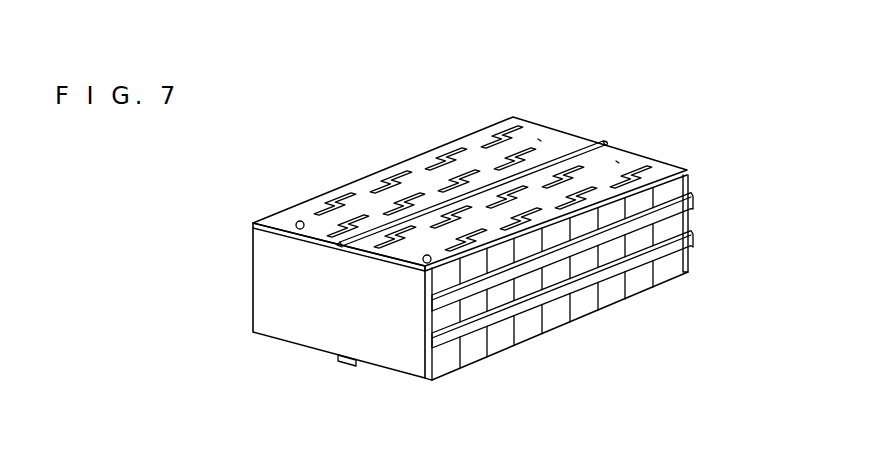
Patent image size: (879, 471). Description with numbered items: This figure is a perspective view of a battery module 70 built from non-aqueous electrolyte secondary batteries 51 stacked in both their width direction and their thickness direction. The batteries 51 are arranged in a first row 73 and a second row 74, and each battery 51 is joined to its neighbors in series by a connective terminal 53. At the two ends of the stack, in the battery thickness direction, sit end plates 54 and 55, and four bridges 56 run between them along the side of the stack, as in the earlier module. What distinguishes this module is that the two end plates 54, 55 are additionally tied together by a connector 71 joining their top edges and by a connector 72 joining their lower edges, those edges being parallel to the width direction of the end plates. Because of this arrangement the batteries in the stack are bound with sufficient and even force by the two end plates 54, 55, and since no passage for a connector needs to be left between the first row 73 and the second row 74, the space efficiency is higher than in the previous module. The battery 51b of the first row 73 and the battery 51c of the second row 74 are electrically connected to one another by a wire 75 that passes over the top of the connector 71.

The battery module 70 is at (488, 87).
The first row 73 is at (406, 152).
The connective terminal 53 is at (340, 203).
The wire 75 is at (580, 146).
The connector 71 is at (350, 248).
The battery 51b is at (540, 140).
The battery 51c is at (617, 162).
The end plate 54 is at (390, 353).
The connector 72 is at (346, 362).
The non-aqueous electrolyte secondary battery 51 is at (444, 357).
The second row 74 is at (635, 301).
The end plate 55 is at (686, 176).
The bridge 56 is at (690, 237).